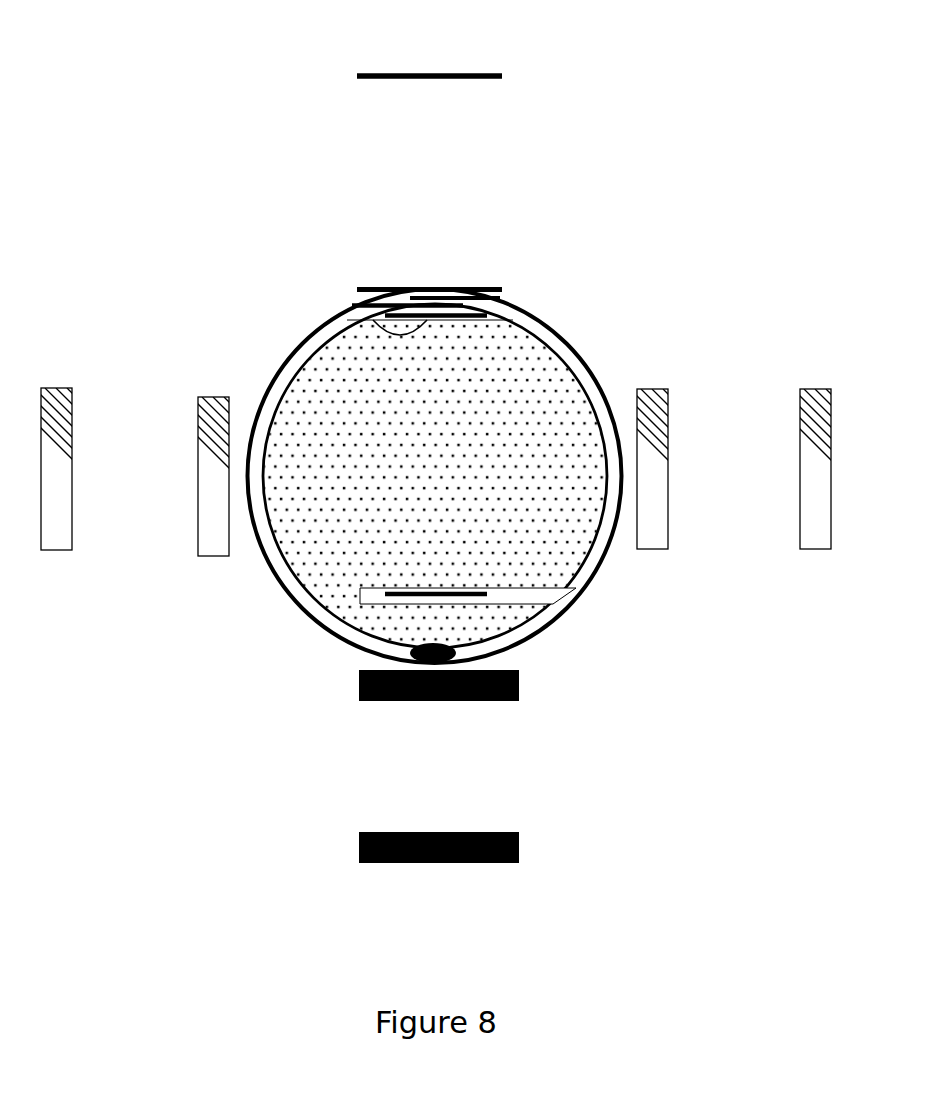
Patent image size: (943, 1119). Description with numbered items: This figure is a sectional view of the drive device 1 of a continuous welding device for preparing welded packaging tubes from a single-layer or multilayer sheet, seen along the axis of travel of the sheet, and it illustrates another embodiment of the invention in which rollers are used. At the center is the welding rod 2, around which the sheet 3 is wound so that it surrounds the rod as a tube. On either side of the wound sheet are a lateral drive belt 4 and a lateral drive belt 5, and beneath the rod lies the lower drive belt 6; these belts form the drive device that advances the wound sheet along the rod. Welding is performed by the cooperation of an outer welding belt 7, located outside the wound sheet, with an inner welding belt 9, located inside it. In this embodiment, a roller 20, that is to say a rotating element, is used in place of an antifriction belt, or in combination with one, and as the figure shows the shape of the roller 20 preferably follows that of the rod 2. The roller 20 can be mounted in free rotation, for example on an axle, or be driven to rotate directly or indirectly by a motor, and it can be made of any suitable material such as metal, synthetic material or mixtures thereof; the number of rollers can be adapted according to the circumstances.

The sectional view of the drive device 1 is at (147, 101).
The welding rod 2 is at (507, 383).
The sheet 3 is at (283, 578).
The lateral drive belt 4 is at (213, 442).
The lateral drive belt 5 is at (806, 440).
The lower drive belt 6 is at (402, 689).
The outer welding belt 7 is at (437, 288).
The inner welding belt 9 is at (418, 590).
The roller(s) 20 is at (450, 648).